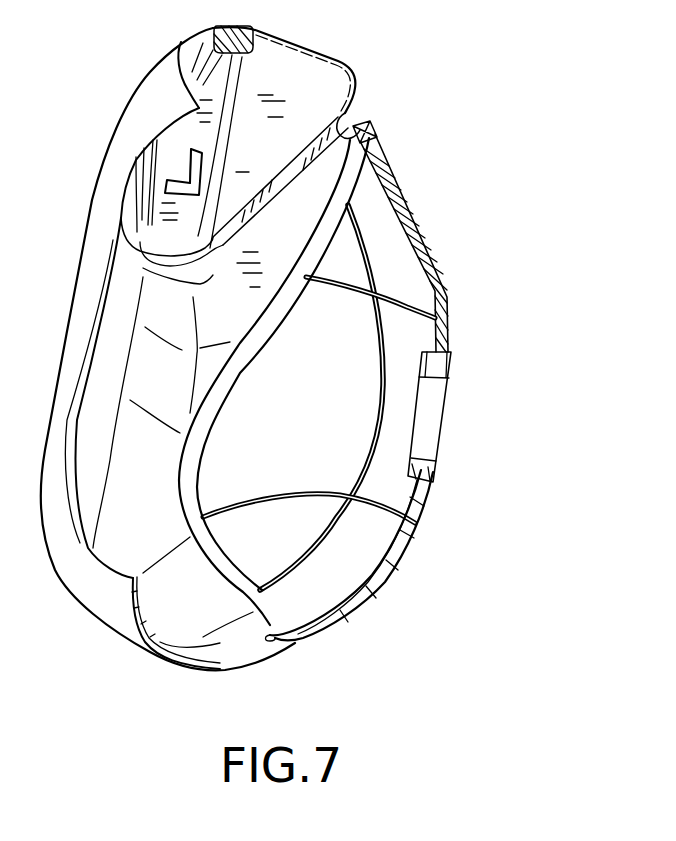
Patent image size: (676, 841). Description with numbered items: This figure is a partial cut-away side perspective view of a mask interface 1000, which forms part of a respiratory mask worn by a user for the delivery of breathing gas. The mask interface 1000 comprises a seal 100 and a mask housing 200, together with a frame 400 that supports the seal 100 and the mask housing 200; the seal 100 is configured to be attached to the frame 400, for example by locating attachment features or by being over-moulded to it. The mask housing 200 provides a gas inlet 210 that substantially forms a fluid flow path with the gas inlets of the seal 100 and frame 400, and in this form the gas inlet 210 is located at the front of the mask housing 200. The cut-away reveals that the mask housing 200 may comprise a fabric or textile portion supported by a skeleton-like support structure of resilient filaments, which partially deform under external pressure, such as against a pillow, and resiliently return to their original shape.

The mask interface 1000 is at (442, 147).
The seal 100 is at (219, 603).
The mask housing 200 is at (362, 527).
The gas inlet 210 is at (433, 410).
The frame 400 is at (365, 133).